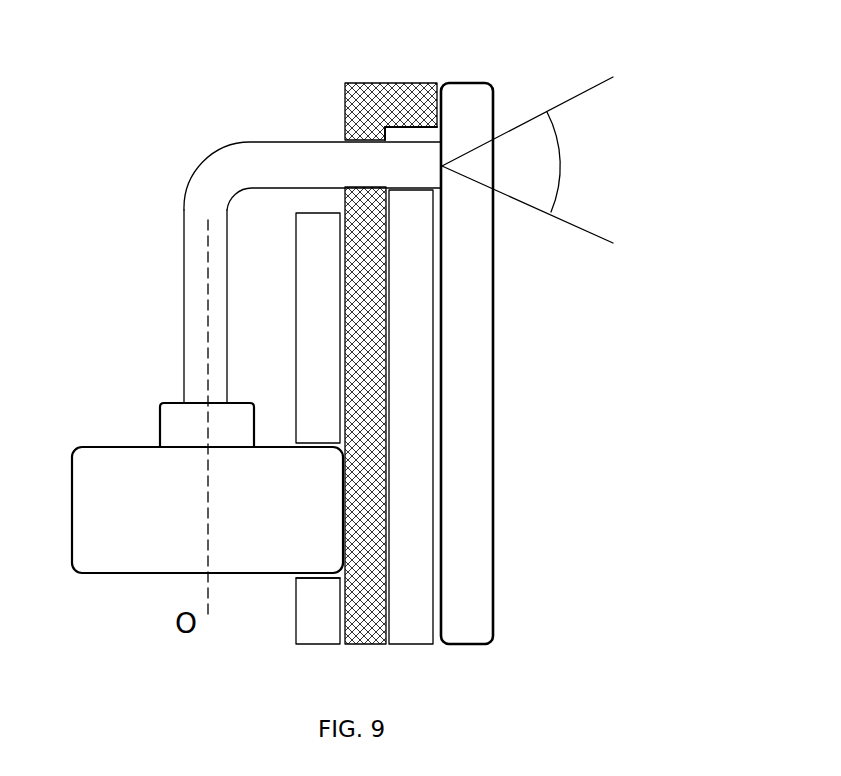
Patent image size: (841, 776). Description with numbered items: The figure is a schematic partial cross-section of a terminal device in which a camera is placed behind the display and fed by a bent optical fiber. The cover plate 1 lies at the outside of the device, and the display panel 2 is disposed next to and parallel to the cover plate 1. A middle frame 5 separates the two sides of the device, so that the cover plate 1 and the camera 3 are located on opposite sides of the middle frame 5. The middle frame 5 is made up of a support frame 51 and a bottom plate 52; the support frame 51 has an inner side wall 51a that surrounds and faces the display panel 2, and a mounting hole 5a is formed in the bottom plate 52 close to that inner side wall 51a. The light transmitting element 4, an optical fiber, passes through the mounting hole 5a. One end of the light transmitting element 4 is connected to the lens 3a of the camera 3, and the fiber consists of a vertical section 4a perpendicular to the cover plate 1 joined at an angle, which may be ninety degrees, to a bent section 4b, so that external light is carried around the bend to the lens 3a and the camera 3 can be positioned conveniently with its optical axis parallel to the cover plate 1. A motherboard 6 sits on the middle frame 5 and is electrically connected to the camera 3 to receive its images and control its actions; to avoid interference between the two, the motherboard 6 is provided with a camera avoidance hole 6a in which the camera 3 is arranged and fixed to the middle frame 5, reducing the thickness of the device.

The cover plate 1 is at (487, 308).
The display panel 2 is at (407, 425).
The camera 3 is at (142, 537).
The lens 3a is at (173, 417).
The light transmitting element 4 is at (261, 267).
The vertical section 4a is at (253, 172).
The bent section 4b is at (178, 303).
The middle frame 5 is at (355, 331).
The mounting hole 5a is at (393, 191).
The support frame 51 is at (393, 100).
The inner side wall 51a is at (417, 120).
The bottom plate 52 is at (357, 212).
The motherboard 6 is at (327, 600).
The camera avoidance hole 6a is at (330, 573).